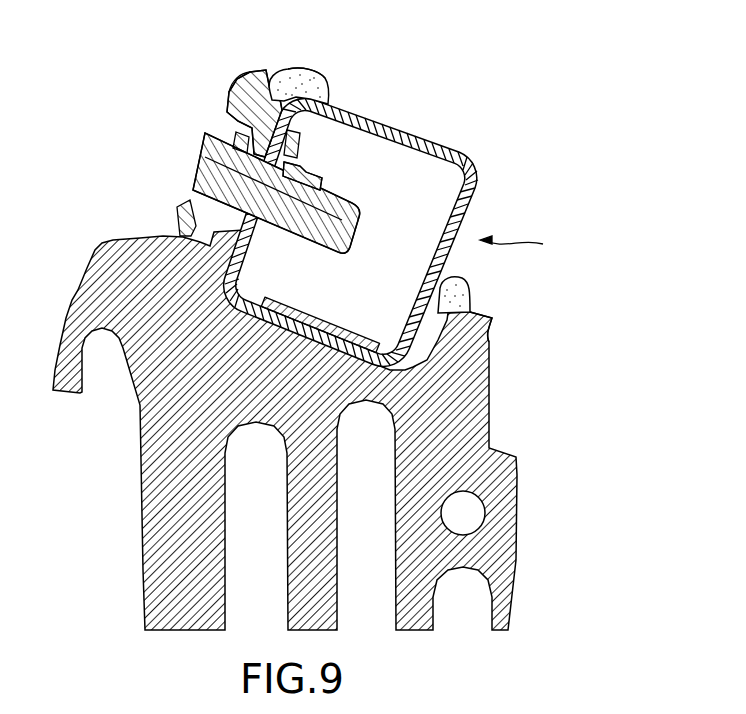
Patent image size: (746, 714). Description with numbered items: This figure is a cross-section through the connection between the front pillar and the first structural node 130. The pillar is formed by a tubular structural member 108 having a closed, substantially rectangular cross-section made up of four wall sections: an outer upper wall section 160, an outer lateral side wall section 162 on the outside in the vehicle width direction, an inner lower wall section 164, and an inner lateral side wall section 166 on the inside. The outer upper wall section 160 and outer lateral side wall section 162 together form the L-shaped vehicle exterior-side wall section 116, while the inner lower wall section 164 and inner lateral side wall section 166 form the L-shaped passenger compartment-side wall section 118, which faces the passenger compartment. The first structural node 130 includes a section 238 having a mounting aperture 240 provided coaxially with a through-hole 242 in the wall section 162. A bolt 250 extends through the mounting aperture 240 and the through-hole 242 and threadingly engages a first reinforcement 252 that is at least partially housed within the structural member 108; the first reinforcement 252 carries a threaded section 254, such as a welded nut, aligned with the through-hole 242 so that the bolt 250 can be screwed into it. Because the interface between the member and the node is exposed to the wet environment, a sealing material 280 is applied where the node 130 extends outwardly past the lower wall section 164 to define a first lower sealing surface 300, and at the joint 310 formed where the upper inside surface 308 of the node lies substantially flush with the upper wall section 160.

The structural member 108 is at (383, 213).
The vehicle exterior-side wall section 116 is at (531, 244).
The passenger compartment-side wall section 118 is at (273, 127).
The first structural node 130 is at (472, 418).
The outer upper wall section 160 is at (377, 213).
The outer lateral side wall section 162 is at (244, 262).
The inner lower wall section 164 is at (337, 340).
The inner lateral side wall section 166 is at (451, 252).
The section 238 is at (215, 245).
The mounting aperture 240 is at (238, 133).
The through-hole 242 is at (290, 158).
The bolt 250 is at (205, 175).
The first reinforcement 252 is at (303, 317).
The threaded section 254 is at (323, 182).
The sealing material 280 is at (312, 70).
The first lower sealing surface 300 is at (492, 326).
The upper inside surface 308 is at (268, 72).
The joint 310 is at (296, 80).